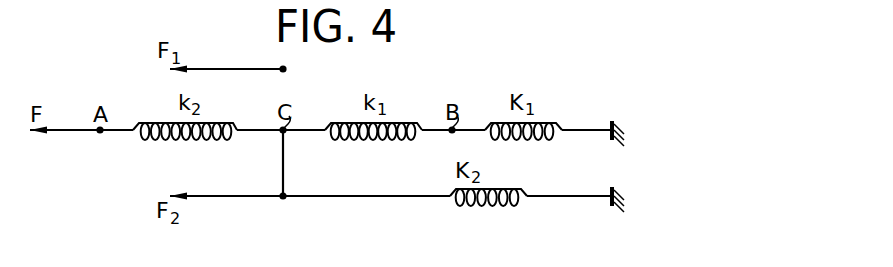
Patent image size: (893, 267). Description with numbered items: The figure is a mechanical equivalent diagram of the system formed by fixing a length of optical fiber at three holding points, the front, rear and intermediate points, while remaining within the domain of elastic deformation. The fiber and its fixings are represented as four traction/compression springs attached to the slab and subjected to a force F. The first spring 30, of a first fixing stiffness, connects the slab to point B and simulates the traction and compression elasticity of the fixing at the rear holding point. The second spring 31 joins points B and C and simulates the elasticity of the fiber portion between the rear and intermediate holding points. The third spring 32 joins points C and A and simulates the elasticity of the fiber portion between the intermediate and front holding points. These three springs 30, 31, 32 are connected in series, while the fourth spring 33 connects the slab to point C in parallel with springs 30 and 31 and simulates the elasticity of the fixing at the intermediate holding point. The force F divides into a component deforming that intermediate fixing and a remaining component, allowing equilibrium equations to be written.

The first spring 30 is at (536, 141).
The second spring 31 is at (392, 141).
The third spring 32 is at (207, 141).
The fourth spring 33 is at (504, 207).